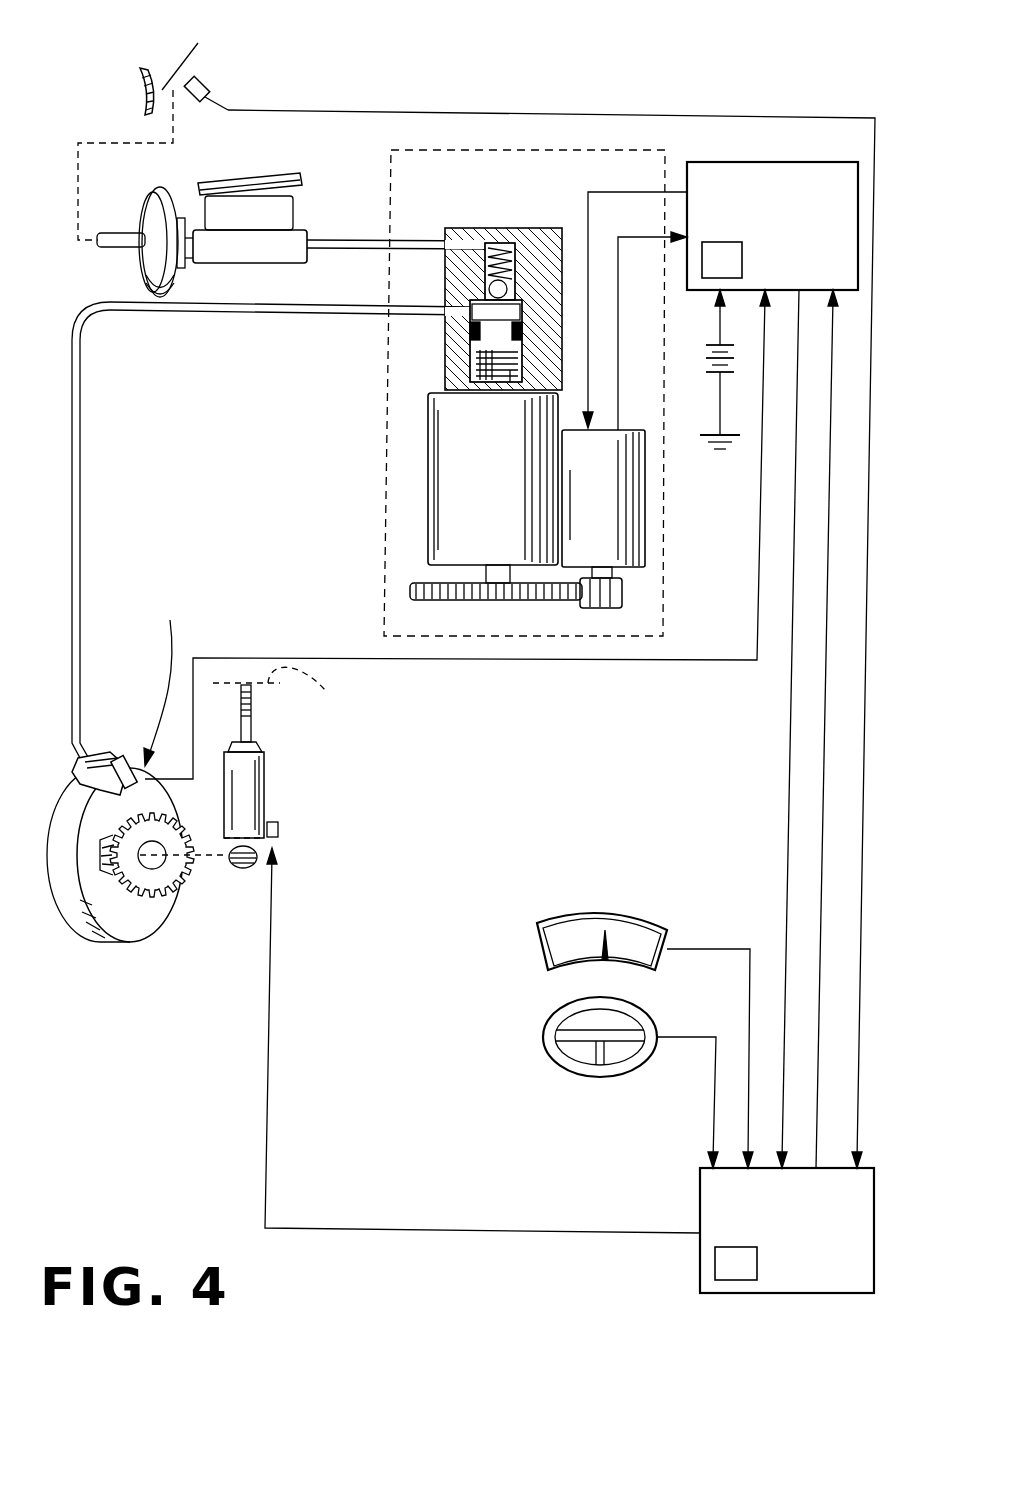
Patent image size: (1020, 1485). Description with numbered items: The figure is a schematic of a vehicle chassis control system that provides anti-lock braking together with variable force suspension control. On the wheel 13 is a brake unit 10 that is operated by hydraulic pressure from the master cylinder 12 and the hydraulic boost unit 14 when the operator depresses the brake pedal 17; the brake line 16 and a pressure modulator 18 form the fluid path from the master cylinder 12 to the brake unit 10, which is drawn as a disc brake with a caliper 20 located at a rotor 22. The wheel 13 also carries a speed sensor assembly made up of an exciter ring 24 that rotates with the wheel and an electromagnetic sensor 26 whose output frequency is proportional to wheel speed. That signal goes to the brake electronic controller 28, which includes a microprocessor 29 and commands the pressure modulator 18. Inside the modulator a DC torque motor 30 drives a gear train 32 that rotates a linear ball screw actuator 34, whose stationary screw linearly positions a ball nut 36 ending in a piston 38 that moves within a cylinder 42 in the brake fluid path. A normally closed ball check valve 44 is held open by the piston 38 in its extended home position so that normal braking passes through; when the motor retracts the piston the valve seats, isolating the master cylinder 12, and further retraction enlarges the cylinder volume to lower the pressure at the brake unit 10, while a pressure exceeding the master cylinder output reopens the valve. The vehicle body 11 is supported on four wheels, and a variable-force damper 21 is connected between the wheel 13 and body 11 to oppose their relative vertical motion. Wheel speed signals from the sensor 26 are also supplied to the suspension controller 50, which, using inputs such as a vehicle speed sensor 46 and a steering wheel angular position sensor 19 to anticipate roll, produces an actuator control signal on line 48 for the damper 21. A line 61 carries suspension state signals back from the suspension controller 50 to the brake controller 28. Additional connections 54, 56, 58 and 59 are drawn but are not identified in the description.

The brake unit 10 is at (158, 679).
The vehicle body 11 is at (285, 687).
The master cylinder 12 is at (285, 232).
The wheel 13 is at (138, 864).
The hydraulic boost unit 14 is at (150, 228).
The brake line 16 is at (360, 252).
The brake pedal 17 is at (140, 82).
The pressure modulator 18 is at (385, 462).
The steering wheel angular position sensor 19 is at (543, 1040).
The caliper 20 is at (95, 760).
The variable-force damper 21 is at (245, 802).
The rotor 22 is at (130, 935).
The exciter ring 24 is at (180, 880).
The electromagnetic sensor 26 is at (128, 768).
The brake electronic controller 28 is at (737, 162).
The microprocessor 29 is at (712, 280).
The DC torque motor 30 is at (643, 430).
The gear train 32 is at (408, 593).
The linear ball screw actuator 34 is at (450, 522).
The ball nut 36 is at (510, 386).
The piston 38 is at (498, 360).
The cylinder 42 is at (478, 330).
The ball check valve 44 is at (478, 290).
The vehicle speed sensor 46 is at (667, 925).
The actuator control signal line 48 is at (265, 1125).
The suspension controller 50 is at (700, 1258).
The battery 54 is at (716, 368).
The signal line 56 is at (865, 790).
The brake control line 58 is at (545, 668).
The signal line 59 is at (790, 700).
The line 61 is at (825, 745).